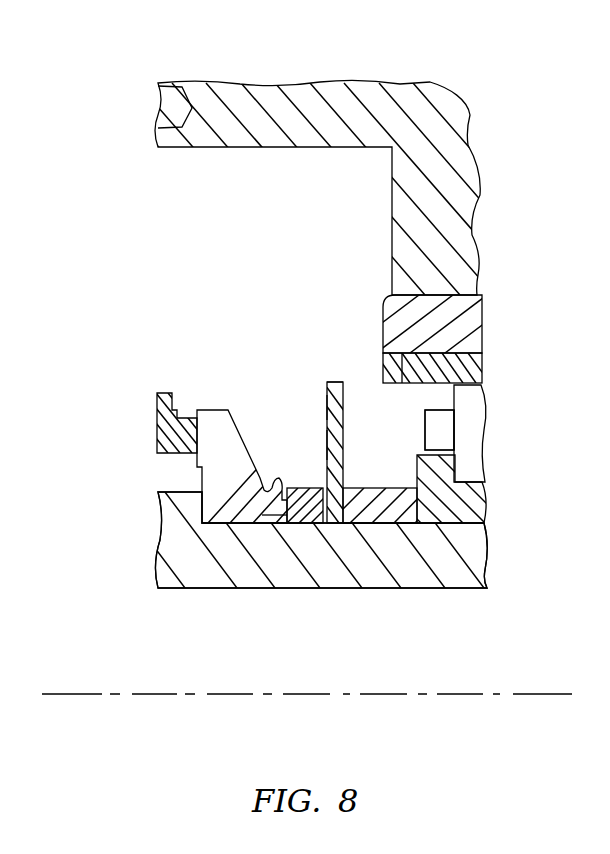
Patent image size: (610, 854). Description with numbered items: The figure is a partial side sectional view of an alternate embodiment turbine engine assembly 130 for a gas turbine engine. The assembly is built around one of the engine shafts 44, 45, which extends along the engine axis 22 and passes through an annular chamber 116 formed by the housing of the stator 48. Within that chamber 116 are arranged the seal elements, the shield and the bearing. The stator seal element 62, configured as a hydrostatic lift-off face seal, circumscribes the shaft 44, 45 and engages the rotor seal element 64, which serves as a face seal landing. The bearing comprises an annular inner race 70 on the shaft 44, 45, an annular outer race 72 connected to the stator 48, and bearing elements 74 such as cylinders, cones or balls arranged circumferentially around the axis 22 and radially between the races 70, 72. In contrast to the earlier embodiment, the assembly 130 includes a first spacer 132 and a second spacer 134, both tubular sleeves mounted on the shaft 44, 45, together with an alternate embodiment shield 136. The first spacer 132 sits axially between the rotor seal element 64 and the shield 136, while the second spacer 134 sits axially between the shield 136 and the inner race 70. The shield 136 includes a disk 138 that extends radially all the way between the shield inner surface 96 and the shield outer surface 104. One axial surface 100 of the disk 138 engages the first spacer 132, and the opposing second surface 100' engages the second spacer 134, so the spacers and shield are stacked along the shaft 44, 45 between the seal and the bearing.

The axis 22 is at (456, 694).
The shaft 44 is at (488, 568).
The shaft 45 is at (488, 568).
The stator 48 is at (479, 197).
The stator seal element 62 is at (157, 432).
The rotor seal element 64 is at (215, 526).
The inner race 70 is at (462, 526).
The outer race 72 is at (482, 371).
The bearing elements 74 is at (485, 428).
The shield inner surface 96 is at (335, 528).
The surface 100 is at (287, 421).
The second surface 100' is at (398, 425).
The shield outer surface 104 is at (331, 380).
The annular chamber 116 is at (264, 230).
The turbine engine assembly 130 is at (113, 113).
The first spacer 132 is at (290, 526).
The second spacer 134 is at (412, 526).
The shield 136 is at (357, 526).
The disk 138 is at (327, 410).